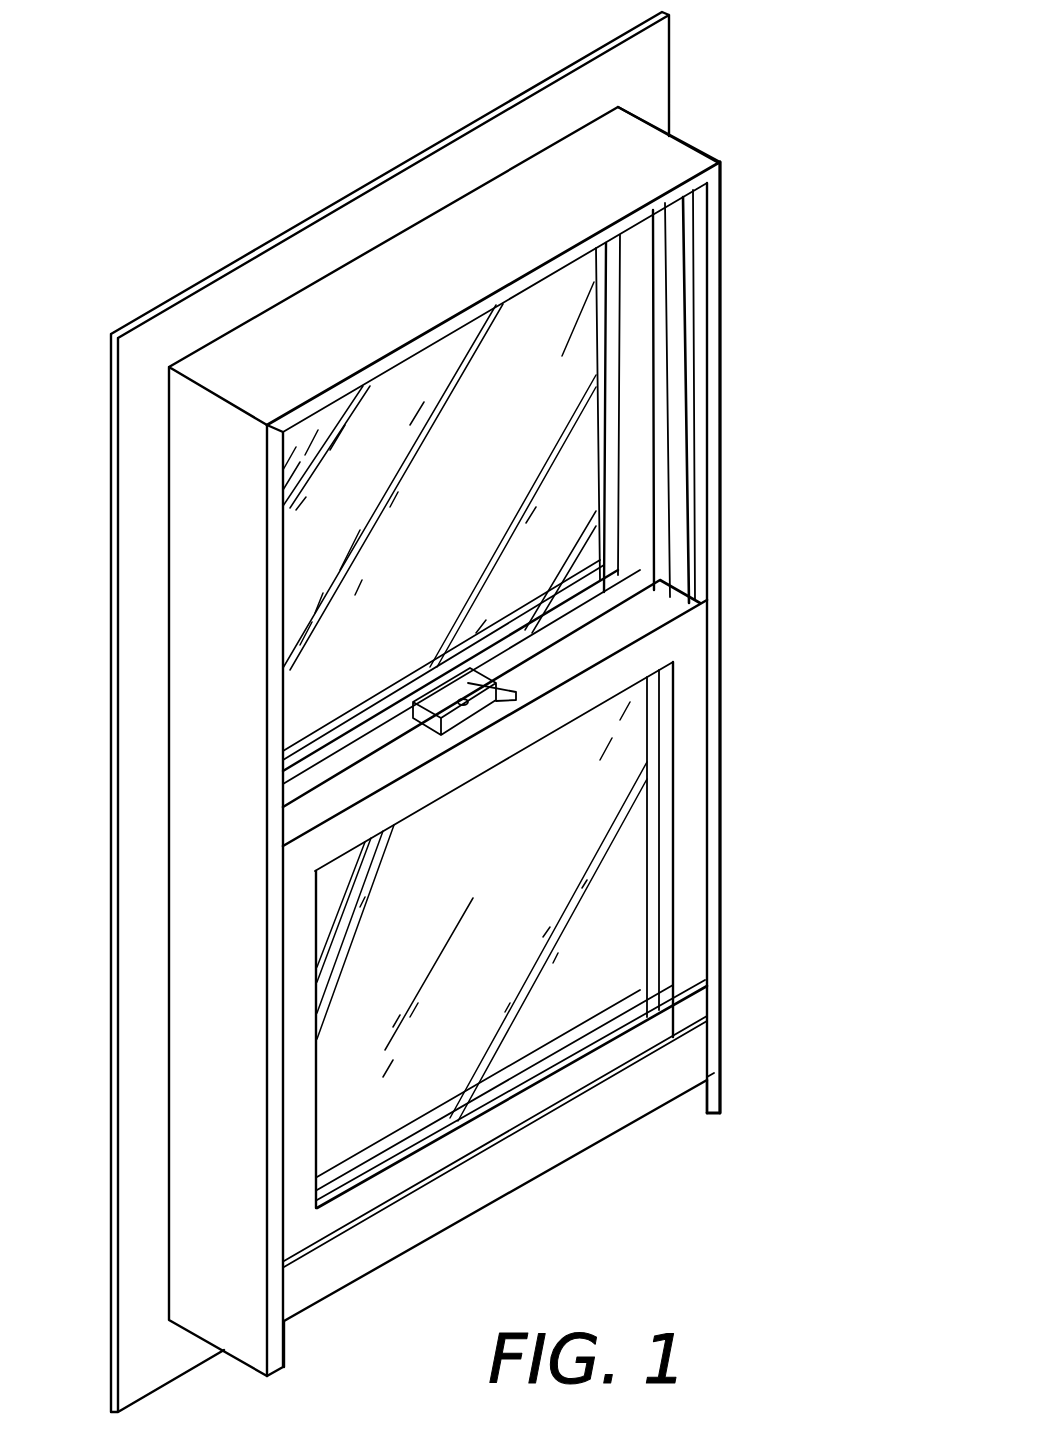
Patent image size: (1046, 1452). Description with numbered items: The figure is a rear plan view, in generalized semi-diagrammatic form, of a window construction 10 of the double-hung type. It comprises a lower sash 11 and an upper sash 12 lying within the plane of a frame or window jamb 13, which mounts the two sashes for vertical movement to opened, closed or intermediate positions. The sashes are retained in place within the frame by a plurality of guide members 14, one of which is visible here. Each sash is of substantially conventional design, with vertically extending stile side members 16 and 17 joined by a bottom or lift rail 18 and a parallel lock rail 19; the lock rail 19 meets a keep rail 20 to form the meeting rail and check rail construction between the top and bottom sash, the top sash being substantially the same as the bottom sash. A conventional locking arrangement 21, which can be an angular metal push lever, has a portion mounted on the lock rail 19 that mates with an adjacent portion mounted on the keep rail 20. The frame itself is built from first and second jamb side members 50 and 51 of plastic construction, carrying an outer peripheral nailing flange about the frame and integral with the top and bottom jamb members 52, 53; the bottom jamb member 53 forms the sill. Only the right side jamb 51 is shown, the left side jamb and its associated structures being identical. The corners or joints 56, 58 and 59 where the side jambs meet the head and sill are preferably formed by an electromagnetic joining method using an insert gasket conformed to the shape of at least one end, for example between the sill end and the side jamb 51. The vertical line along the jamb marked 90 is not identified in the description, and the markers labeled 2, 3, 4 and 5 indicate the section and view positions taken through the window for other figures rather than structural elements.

The window construction 10 is at (750, 606).
The lower sash 11 is at (686, 876).
The upper sash 12 is at (613, 357).
The frame or window jamb 13 is at (720, 1038).
The guide member 14 is at (686, 579).
The stile side member 16 is at (695, 800).
The stile side member 17 is at (300, 997).
The bottom or lift rail 18 is at (500, 1120).
The lock rail 19 is at (610, 638).
The keep rail 20 is at (596, 601).
The locking arrangement 21 is at (507, 686).
The first jamb side member 50 is at (252, 1143).
The second jamb side member 51 is at (286, 1323).
The top jamb member 52 is at (419, 293).
The bottom jamb member 53 is at (601, 1122).
The corner or joint 56 is at (693, 1097).
The corner or joint 58 is at (285, 424).
The corner or joint 59 is at (708, 178).
The jamb liner 90 is at (674, 299).
The section line 2 is at (535, 353).
The section line 3 is at (782, 708).
The section line 4 is at (534, 175).
The section line 5 is at (774, 346).